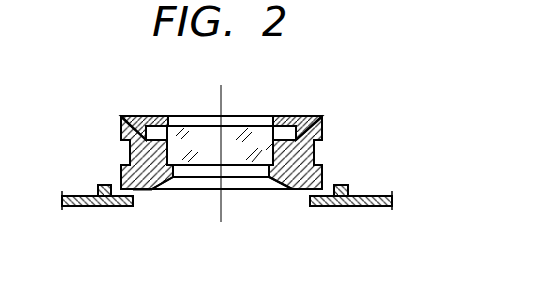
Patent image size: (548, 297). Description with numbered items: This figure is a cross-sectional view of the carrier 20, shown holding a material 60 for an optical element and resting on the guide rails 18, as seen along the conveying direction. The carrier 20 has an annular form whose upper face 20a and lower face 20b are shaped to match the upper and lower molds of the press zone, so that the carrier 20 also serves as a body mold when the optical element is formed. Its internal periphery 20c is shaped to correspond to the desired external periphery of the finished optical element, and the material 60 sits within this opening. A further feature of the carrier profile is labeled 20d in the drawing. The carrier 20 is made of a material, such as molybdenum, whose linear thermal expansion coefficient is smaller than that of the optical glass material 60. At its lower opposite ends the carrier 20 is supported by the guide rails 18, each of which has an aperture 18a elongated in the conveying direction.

The carrier 20 is at (366, 118).
The upper face 20a is at (302, 126).
The lower face 20b is at (276, 187).
The internal periphery 20c is at (167, 144).
The outer groove 20d is at (314, 149).
The material for optical element 60 is at (257, 130).
The guide rails 18 is at (88, 207).
The aperture 18a is at (184, 201).